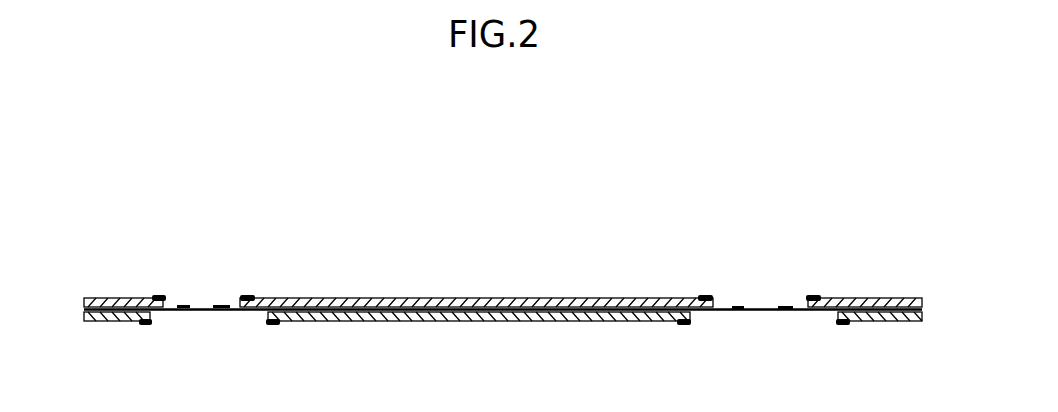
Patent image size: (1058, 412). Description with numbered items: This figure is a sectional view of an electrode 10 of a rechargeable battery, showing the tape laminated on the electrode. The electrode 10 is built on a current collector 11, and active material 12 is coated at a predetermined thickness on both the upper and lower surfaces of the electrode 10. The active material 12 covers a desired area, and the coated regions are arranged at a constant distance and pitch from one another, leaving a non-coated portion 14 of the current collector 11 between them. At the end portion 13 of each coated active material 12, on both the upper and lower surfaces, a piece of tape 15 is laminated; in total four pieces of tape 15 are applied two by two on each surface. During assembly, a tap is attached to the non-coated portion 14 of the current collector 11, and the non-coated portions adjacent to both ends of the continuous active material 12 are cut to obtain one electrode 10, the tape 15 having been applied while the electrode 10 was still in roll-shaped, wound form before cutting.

The electrode 10 is at (703, 186).
The current collector 11 is at (535, 307).
The active material 12 is at (481, 306).
The end portion 13 is at (264, 322).
The non-coated portion 14 is at (763, 307).
The tape 15 is at (731, 306).